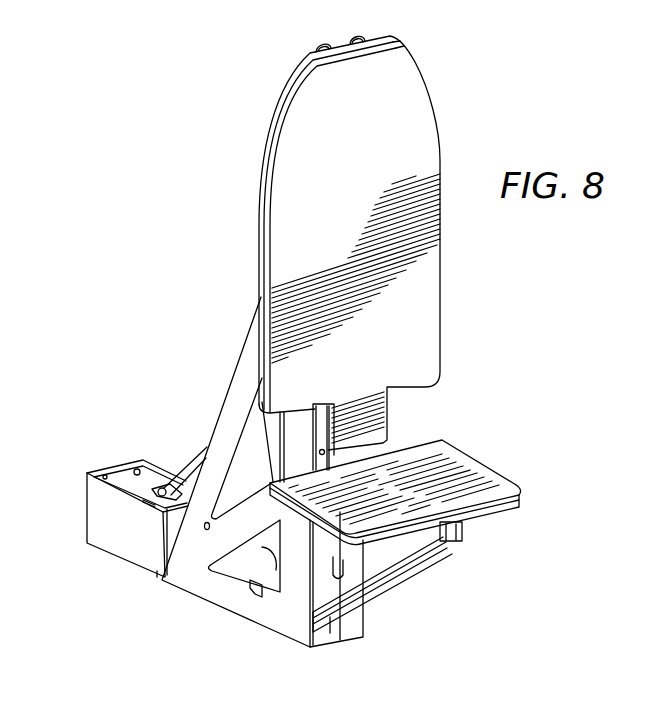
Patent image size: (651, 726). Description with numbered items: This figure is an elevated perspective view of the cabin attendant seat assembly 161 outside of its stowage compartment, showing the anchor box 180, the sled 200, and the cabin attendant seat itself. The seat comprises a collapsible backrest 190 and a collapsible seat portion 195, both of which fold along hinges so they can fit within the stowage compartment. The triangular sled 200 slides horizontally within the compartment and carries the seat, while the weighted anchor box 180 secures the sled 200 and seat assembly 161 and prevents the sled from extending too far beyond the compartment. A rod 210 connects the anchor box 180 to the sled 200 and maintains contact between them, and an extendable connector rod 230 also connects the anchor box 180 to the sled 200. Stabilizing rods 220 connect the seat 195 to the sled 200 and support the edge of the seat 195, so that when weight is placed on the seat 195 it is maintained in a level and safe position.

The collapsible backrest 190 is at (423, 63).
The cabin attendant seat 161 is at (425, 317).
The collapsible seat portion 195 is at (473, 477).
The stabilizing rods 220 is at (387, 575).
The sled 200 is at (200, 575).
The rod 210 is at (257, 573).
The extendable connector rod 230 is at (193, 463).
The anchor box 180 is at (127, 540).